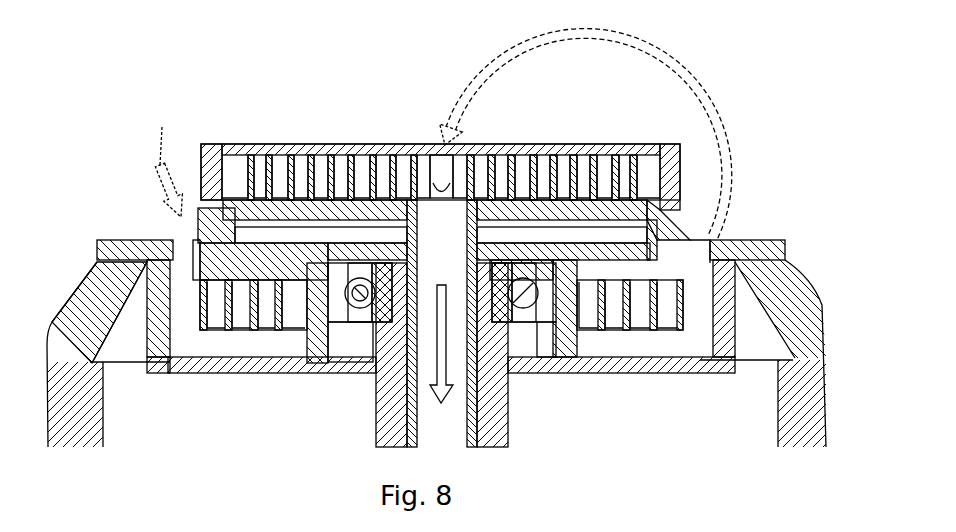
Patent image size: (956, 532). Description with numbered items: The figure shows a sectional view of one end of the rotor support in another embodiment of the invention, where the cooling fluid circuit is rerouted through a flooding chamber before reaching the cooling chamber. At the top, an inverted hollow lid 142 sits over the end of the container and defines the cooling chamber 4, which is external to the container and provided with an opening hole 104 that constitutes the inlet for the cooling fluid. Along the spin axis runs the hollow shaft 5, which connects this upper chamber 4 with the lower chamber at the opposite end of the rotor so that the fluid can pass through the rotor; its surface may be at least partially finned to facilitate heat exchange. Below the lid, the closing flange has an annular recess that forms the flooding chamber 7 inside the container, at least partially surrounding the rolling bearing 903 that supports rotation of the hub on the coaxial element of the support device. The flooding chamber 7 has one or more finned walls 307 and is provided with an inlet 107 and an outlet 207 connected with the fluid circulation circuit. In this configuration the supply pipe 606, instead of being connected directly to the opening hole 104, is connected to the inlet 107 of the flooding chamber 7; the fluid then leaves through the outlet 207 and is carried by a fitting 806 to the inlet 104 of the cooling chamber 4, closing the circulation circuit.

The cooling chamber 4 is at (243, 174).
The hollow shaft 5 is at (455, 391).
The flooding chamber 7 is at (187, 352).
The opening hole 104 is at (440, 165).
The inlet 107 is at (177, 290).
The lid 142 is at (218, 163).
The outlet 207 is at (697, 305).
The finned walls 307 is at (273, 340).
The supply pipe 606 is at (151, 159).
The fitting 806 is at (733, 172).
The rolling bearing 903 is at (565, 352).